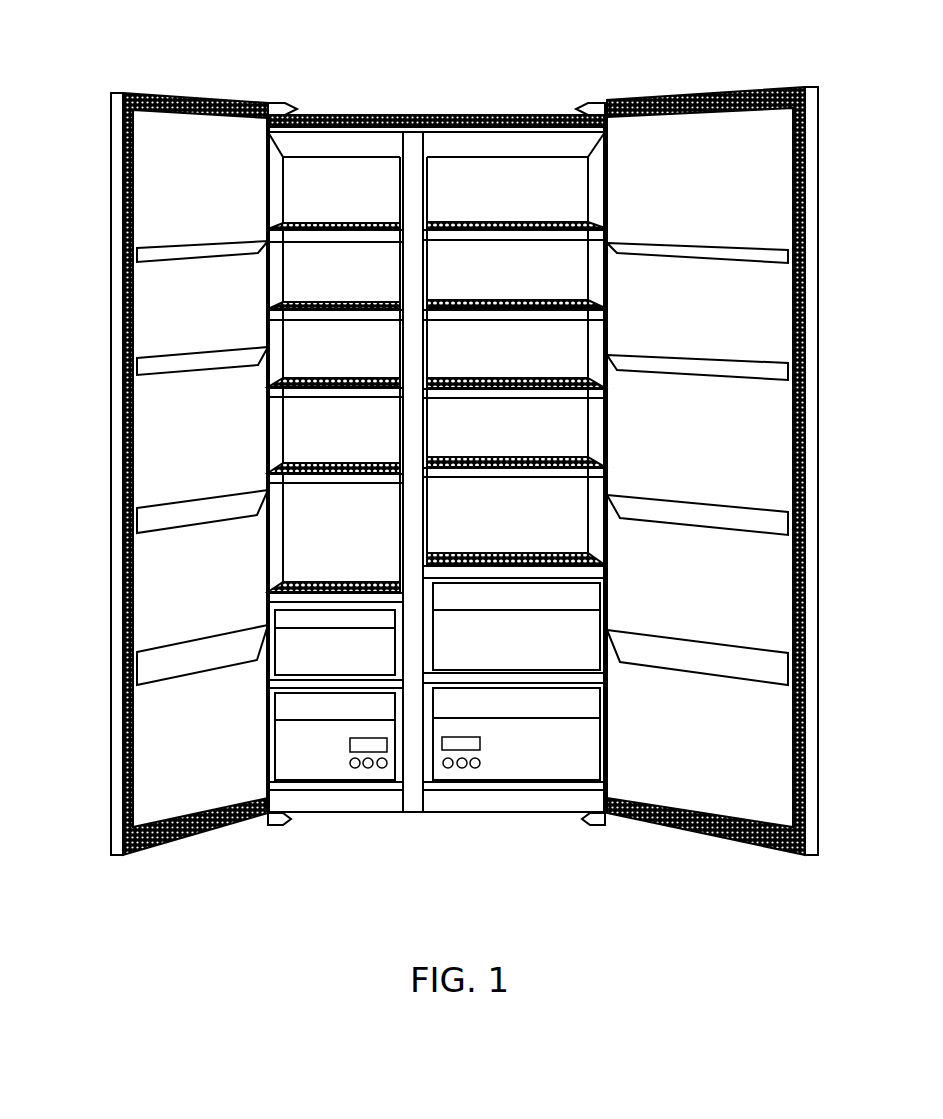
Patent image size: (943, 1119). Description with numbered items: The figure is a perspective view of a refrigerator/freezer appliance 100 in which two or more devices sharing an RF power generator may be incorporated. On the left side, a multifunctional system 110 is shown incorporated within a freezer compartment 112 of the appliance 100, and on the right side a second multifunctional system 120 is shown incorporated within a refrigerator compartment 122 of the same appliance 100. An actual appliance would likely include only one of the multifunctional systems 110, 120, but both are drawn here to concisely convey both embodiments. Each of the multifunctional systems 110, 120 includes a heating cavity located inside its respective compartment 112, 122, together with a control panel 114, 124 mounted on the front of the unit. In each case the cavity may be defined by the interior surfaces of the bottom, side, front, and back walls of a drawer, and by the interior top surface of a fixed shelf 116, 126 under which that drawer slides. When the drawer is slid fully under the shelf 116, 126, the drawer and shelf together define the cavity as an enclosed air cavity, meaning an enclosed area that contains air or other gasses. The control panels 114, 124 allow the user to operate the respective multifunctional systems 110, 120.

The refrigerator/freezer appliance 100 is at (120, 55).
The multifunctional system 110 is at (320, 760).
The freezer compartment 112 is at (349, 186).
The control panel 114 is at (365, 756).
The fixed shelf 116 is at (370, 676).
The multifunctional system 120 is at (553, 742).
The refrigerator compartment 122 is at (510, 186).
The control panel 124 is at (464, 768).
The fixed shelf 126 is at (480, 672).